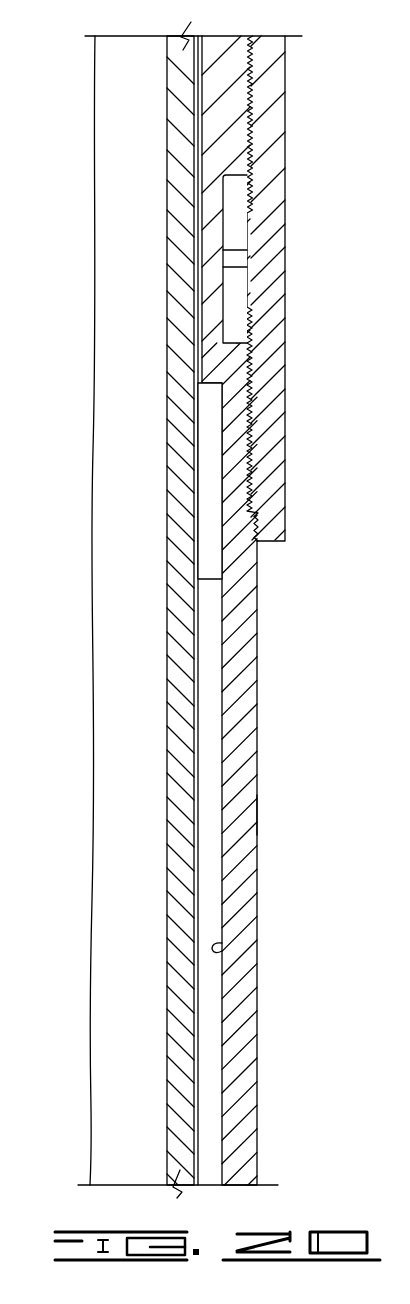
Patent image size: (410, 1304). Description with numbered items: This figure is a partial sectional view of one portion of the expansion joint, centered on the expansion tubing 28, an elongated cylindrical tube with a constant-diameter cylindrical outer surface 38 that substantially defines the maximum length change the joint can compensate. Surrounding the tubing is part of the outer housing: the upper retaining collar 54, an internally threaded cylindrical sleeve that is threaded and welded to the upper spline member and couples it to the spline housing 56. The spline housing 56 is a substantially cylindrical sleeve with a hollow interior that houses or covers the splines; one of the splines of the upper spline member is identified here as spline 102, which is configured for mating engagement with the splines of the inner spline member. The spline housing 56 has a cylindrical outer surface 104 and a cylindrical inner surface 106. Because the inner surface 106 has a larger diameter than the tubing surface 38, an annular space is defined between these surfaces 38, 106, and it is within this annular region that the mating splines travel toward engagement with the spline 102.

The expansion tubing 28 is at (178, 559).
The cylindrical outer surface 38 is at (197, 743).
The upper retaining collar 54 is at (277, 350).
The spline housing 56 is at (243, 643).
The spline 102 is at (208, 437).
The cylindrical outer surface 104 is at (258, 815).
The cylindrical inner surface 106 is at (216, 950).